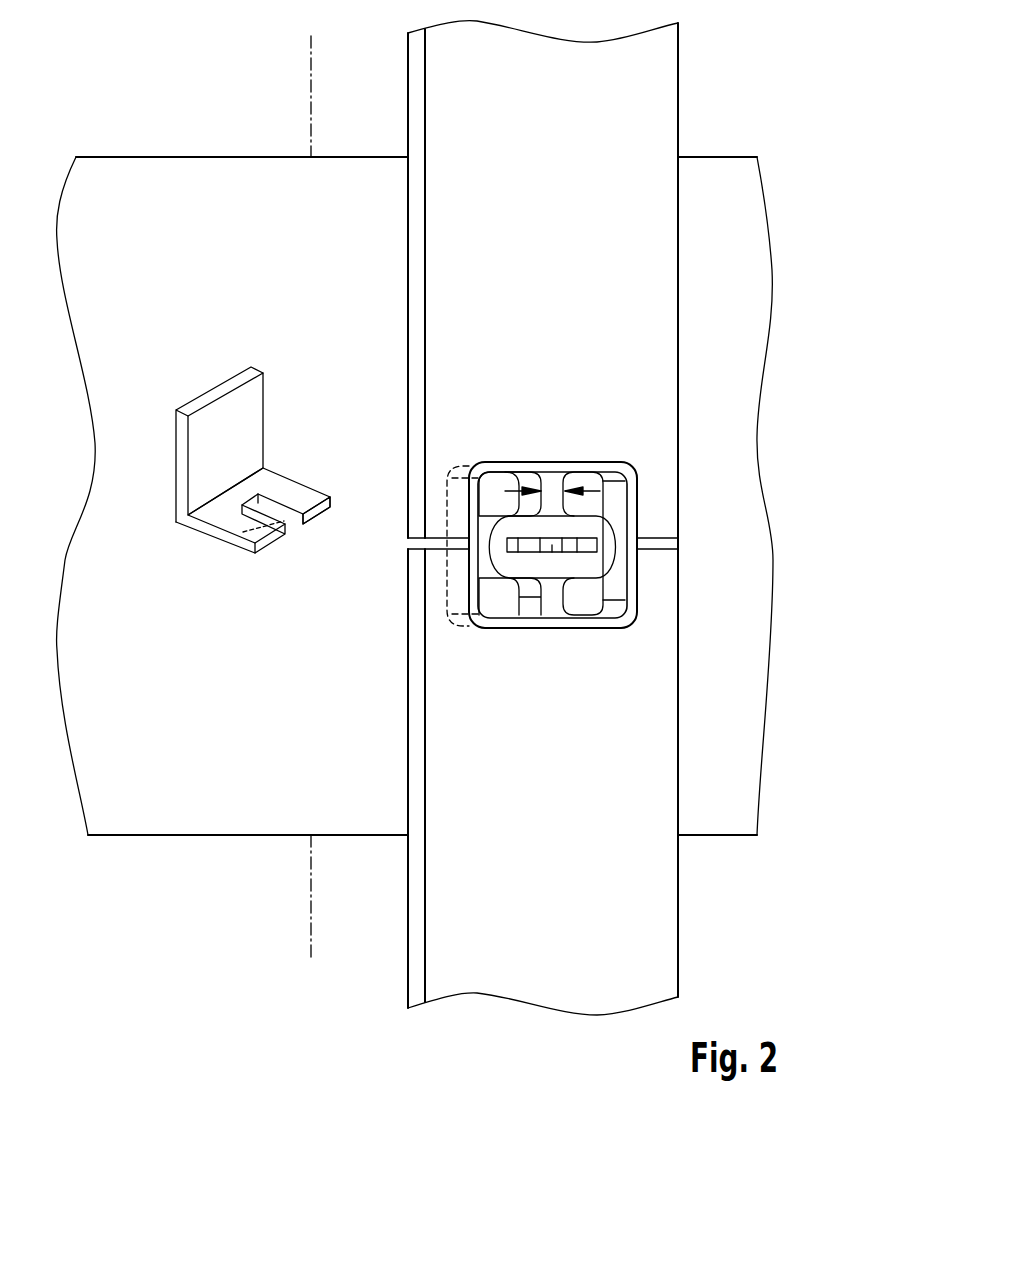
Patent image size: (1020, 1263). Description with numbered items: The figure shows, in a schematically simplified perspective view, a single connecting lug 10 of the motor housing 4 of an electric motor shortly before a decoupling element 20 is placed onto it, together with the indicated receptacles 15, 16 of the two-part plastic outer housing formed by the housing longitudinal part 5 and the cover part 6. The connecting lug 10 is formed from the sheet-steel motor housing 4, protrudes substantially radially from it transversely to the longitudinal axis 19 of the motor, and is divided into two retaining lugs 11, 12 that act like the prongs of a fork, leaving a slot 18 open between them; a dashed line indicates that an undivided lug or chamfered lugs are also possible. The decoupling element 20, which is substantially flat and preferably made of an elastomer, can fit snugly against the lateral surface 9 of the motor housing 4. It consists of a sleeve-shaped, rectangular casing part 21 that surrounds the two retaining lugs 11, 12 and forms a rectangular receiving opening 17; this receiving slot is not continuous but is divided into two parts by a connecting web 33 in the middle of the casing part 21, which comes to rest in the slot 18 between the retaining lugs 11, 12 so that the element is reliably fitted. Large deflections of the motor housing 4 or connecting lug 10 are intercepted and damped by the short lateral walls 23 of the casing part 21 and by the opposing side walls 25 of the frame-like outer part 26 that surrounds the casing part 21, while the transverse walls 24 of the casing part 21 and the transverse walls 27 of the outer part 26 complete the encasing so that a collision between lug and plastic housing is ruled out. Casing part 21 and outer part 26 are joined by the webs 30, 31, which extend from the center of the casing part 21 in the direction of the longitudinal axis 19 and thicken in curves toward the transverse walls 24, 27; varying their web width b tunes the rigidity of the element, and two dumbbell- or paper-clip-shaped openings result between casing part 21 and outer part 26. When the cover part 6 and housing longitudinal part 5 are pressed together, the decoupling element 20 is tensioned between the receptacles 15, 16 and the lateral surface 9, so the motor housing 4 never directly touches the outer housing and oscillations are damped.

The motor housing 4 is at (164, 208).
The housing longitudinal part 5 is at (535, 93).
The cover part 6 is at (535, 973).
The lateral surface 9 is at (106, 198).
The connecting lug 10 is at (275, 487).
The retaining lug 11 is at (243, 547).
The retaining lug 12 is at (305, 516).
The receptacle 15 is at (667, 528).
The receptacle 16 is at (667, 620).
The receiving opening 17 is at (598, 548).
The slot 18 is at (293, 527).
The longitudinal axis 19 is at (311, 75).
The decoupling element 20 is at (612, 623).
The casing part 21 is at (593, 563).
The short lateral wall 23 is at (603, 536).
The transverse wall 24 is at (527, 565).
The side wall 25 is at (630, 603).
The outer part 26 is at (503, 463).
The transverse wall 27 is at (573, 619).
The web 30 is at (553, 488).
The web 31 is at (546, 598).
The connecting web 33 is at (552, 552).
The web width b is at (552, 460).